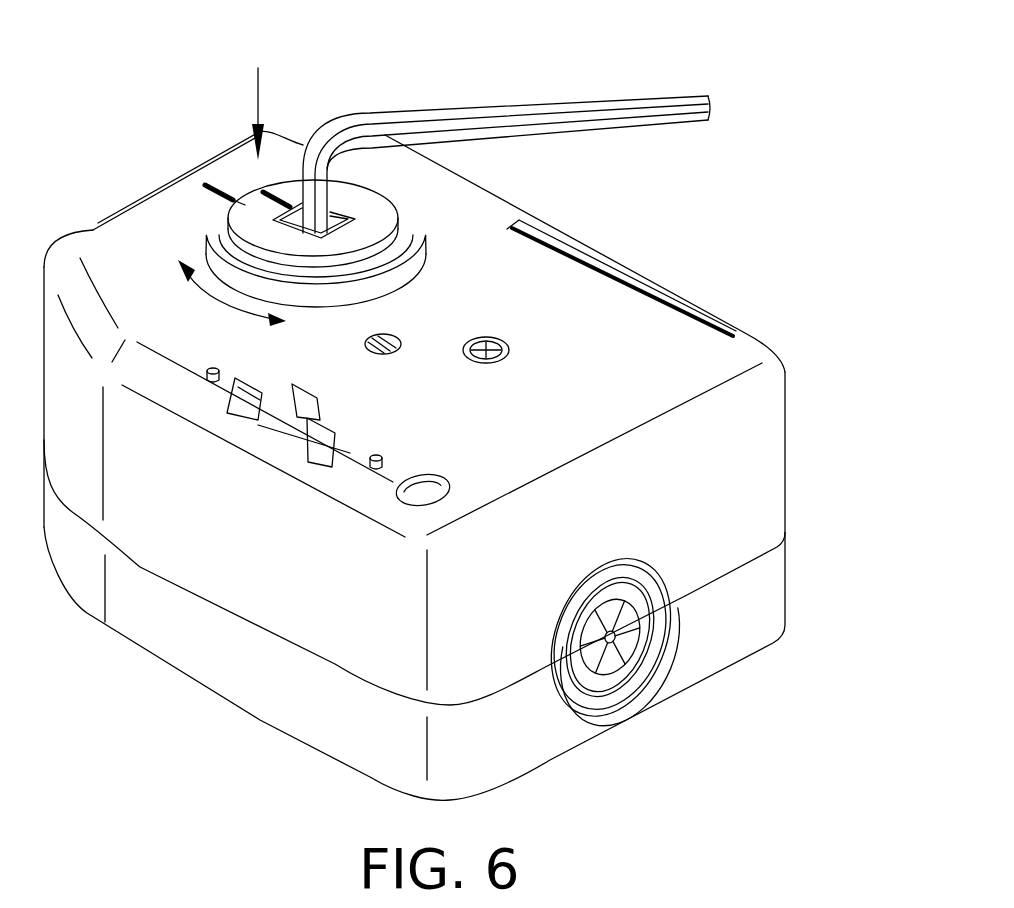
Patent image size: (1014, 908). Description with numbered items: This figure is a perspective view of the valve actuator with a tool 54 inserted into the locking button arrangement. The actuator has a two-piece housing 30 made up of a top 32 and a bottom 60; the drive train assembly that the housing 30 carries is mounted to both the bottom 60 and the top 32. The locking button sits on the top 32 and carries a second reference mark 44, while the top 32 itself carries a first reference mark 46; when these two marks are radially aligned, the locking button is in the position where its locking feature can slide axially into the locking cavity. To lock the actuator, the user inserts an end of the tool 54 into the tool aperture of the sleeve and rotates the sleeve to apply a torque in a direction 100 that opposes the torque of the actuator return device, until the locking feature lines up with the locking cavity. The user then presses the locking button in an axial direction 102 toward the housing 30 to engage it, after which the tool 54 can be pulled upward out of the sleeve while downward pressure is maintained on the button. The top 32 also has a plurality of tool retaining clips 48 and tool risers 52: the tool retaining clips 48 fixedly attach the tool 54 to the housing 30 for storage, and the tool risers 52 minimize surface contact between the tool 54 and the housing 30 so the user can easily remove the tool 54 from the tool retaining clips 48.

The housing 30 is at (858, 529).
The top 32 is at (787, 465).
The bottom 60 is at (787, 577).
The second reference mark 44 is at (277, 189).
The first reference mark 46 is at (217, 183).
The tool retaining clips 48 is at (290, 425).
The tool risers 52 is at (207, 383).
The tool 54 is at (663, 95).
The direction 100 is at (205, 297).
The axial direction 102 is at (258, 97).